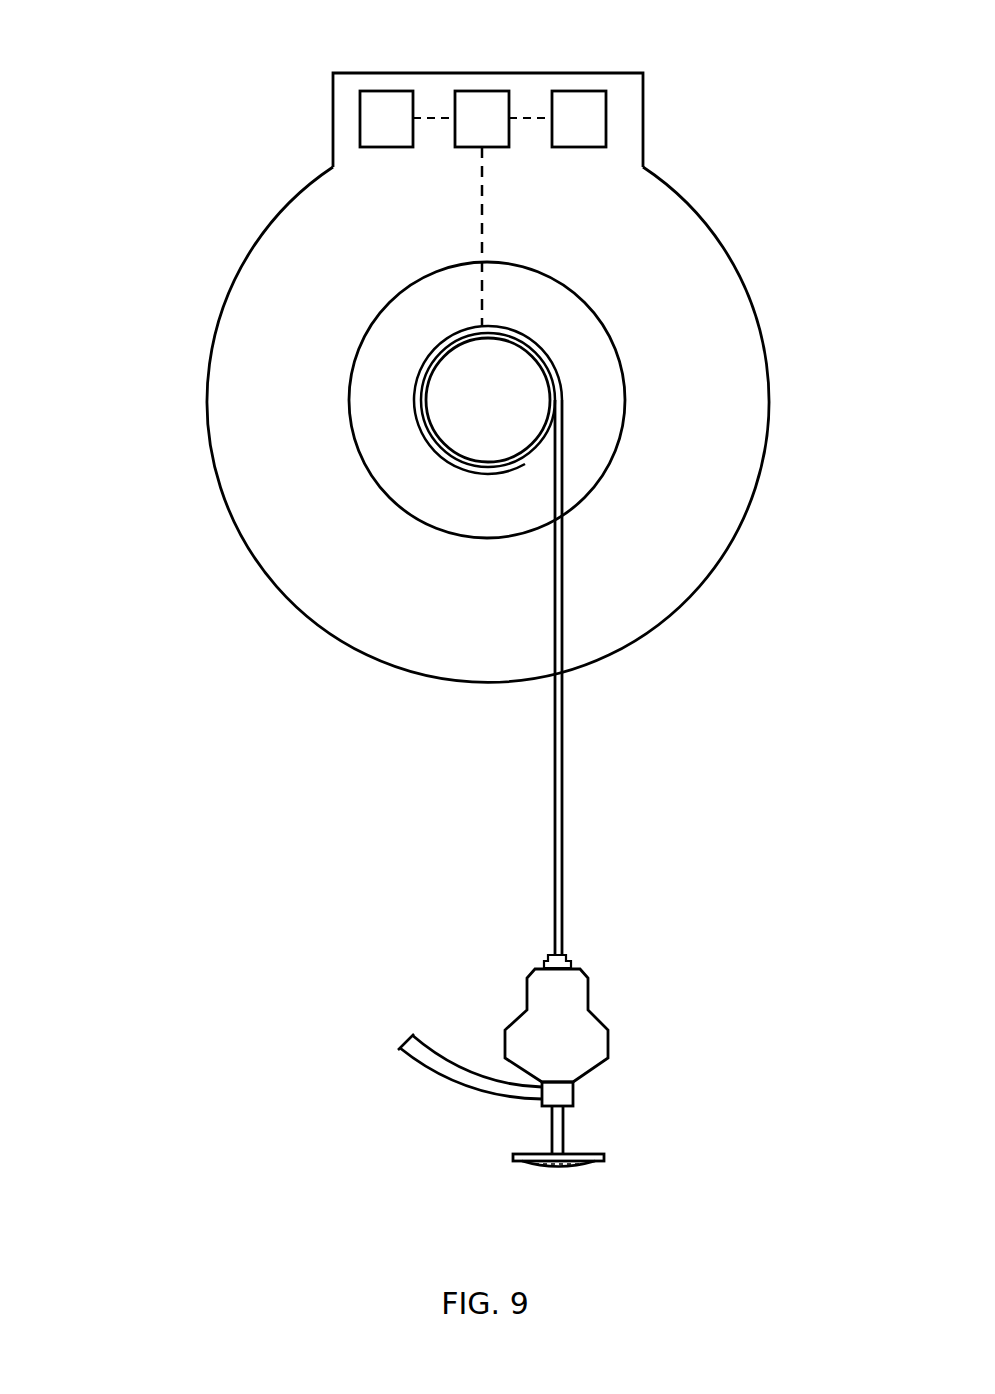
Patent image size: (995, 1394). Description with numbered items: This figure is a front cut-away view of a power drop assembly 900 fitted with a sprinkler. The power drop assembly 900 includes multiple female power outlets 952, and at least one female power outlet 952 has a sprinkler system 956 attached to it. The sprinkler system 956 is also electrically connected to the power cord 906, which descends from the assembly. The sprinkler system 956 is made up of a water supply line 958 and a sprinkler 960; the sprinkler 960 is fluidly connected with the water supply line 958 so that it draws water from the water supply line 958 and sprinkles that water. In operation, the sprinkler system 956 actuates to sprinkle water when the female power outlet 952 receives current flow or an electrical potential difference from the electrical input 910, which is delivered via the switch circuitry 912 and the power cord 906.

The power drop assembly 900 is at (165, 70).
The power cord 906 is at (563, 897).
The electrical input 910 is at (570, 148).
The switch circuitry 912 is at (455, 139).
The female power outlet 952 is at (575, 1080).
The sprinkler system 956 is at (400, 1158).
The water supply line 958 is at (433, 1055).
The sprinkler 960 is at (563, 1170).